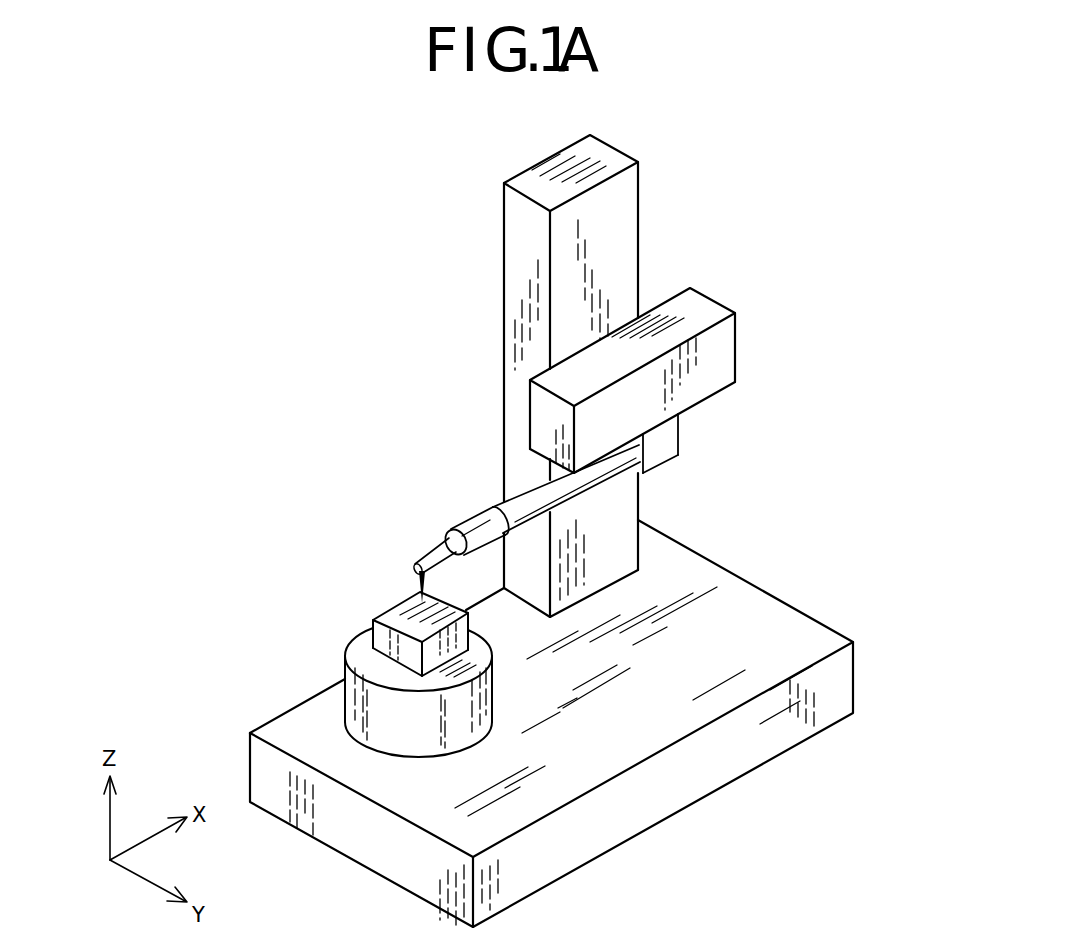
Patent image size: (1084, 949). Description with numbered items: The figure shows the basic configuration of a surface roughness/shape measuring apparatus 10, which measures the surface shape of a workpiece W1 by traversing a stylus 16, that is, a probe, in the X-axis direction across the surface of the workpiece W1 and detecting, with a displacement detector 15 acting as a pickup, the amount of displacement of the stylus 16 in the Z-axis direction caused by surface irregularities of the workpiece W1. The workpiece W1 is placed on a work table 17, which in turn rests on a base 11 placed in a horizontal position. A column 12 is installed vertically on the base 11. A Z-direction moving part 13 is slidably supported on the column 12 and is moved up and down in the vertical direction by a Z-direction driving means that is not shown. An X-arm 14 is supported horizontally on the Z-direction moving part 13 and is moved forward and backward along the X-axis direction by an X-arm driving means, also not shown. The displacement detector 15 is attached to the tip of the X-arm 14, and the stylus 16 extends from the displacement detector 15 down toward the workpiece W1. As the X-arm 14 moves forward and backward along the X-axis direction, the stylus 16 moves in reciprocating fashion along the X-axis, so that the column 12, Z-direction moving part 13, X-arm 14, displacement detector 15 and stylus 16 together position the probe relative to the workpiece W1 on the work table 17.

The surface roughness/shape measuring apparatus 10 is at (214, 217).
The base 11 is at (632, 737).
The column 12 is at (620, 232).
The Z-direction moving part 13 is at (735, 349).
The X-arm 14 is at (597, 468).
The displacement detector 15 is at (467, 515).
The stylus 16 is at (410, 573).
The work table 17 is at (418, 733).
The workpiece W1 is at (393, 597).